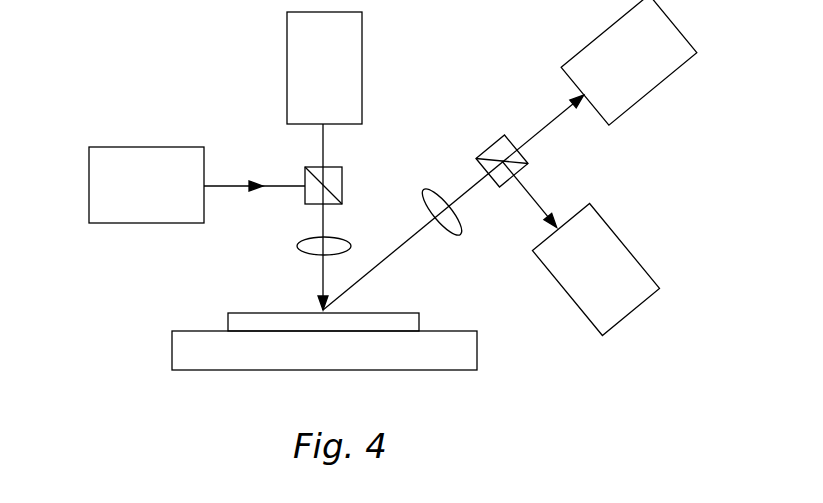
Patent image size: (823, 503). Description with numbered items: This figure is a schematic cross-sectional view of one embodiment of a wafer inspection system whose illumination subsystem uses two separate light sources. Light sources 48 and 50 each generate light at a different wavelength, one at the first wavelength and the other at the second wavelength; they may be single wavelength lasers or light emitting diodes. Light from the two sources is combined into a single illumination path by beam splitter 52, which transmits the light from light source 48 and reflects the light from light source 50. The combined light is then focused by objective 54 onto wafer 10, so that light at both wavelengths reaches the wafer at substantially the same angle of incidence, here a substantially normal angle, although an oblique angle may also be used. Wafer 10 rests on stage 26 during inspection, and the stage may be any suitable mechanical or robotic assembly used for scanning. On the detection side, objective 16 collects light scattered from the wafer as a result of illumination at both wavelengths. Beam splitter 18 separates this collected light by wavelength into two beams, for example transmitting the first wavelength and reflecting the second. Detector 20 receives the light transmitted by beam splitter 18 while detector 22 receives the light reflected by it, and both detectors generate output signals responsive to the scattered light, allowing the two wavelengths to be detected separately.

The wafer 10 is at (408, 312).
The objective 16 is at (462, 231).
The beam splitter 18 is at (489, 147).
The detector 20 is at (683, 32).
The detector 22 is at (645, 263).
The stage 26 is at (477, 352).
The light source 48 is at (287, 67).
The light source 50 is at (89, 182).
The beam splitter 52 is at (342, 183).
The objective 54 is at (300, 238).